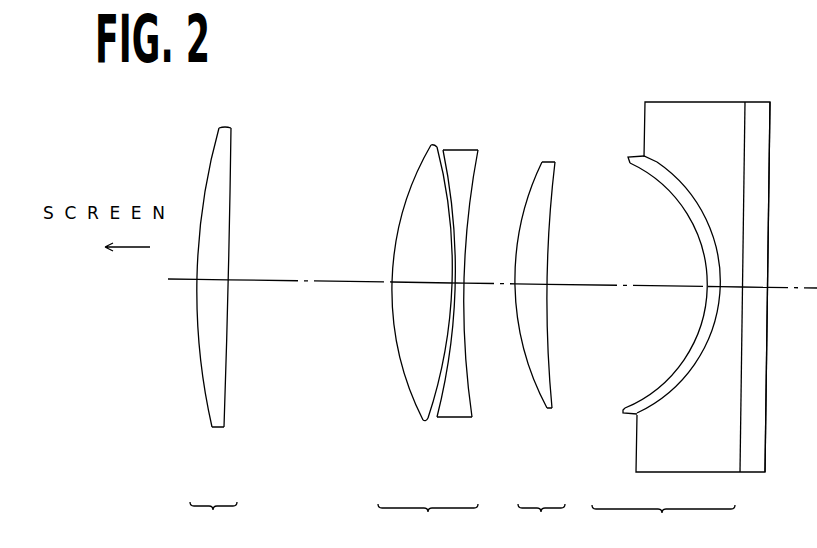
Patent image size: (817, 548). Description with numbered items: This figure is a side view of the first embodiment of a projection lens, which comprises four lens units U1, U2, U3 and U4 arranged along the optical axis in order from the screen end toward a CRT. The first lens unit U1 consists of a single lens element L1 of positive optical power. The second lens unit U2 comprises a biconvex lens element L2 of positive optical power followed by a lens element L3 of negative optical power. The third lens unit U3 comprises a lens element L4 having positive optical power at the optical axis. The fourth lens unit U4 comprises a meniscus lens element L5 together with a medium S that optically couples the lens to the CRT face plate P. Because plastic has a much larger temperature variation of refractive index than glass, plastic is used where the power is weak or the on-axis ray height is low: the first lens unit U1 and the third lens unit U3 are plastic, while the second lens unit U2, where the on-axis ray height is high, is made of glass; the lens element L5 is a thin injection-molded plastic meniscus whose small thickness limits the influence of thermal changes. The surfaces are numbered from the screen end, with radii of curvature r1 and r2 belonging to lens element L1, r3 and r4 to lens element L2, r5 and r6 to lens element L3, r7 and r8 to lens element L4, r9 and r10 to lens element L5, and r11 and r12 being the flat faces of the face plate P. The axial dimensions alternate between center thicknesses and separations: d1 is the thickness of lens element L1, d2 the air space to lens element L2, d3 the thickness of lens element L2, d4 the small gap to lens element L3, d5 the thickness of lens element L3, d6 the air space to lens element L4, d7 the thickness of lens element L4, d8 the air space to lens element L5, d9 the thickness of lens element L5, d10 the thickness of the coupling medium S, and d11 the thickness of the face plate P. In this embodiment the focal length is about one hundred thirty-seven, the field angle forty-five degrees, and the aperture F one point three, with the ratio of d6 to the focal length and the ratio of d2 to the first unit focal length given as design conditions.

The radius of curvature of first surface r1 is at (214, 158).
The radius of curvature of second surface r2 is at (236, 150).
The radius of curvature of third surface r3 is at (417, 168).
The radius of curvature of fourth surface r4 is at (437, 142).
The radius of curvature of fifth surface r5 is at (445, 160).
The radius of curvature of sixth surface r6 is at (478, 162).
The radius of curvature of seventh surface r7 is at (542, 172).
The radius of curvature of eighth surface r8 is at (552, 187).
The radius of curvature of ninth surface r9 is at (638, 173).
The radius of curvature of tenth surface r10 is at (657, 160).
The radius of curvature of eleventh surface r11 is at (743, 127).
The radius of curvature of twelfth surface r12 is at (770, 122).
The center thickness of first lens element d1 is at (212, 293).
The distance between first and second lens elements d2 is at (310, 294).
The center thickness of second lens element d3 is at (422, 295).
The distance between second and third lens elements d4 is at (455, 280).
The center thickness of third lens element d5 is at (458, 278).
The distance between third and fourth lens elements d6 is at (489, 295).
The center thickness of fourth lens element d7 is at (531, 296).
The distance between fourth and fifth lens elements d8 is at (627, 296).
The center thickness of fifth lens element d9 is at (717, 286).
The thickness of coupling medium d10 is at (731, 298).
The thickness of face plate d11 is at (755, 298).
The lens element L1 is at (225, 306).
The biconvex lens element L2 is at (419, 304).
The lens element L3 is at (475, 297).
The lens element L4 is at (549, 319).
The lens element L5 is at (659, 287).
The first lens unit U1 is at (213, 521).
The second lens unit U2 is at (428, 522).
The third lens unit U3 is at (541, 522).
The fourth lens unit U4 is at (663, 523).
The medium S is at (687, 475).
The CRT face plate P is at (763, 290).